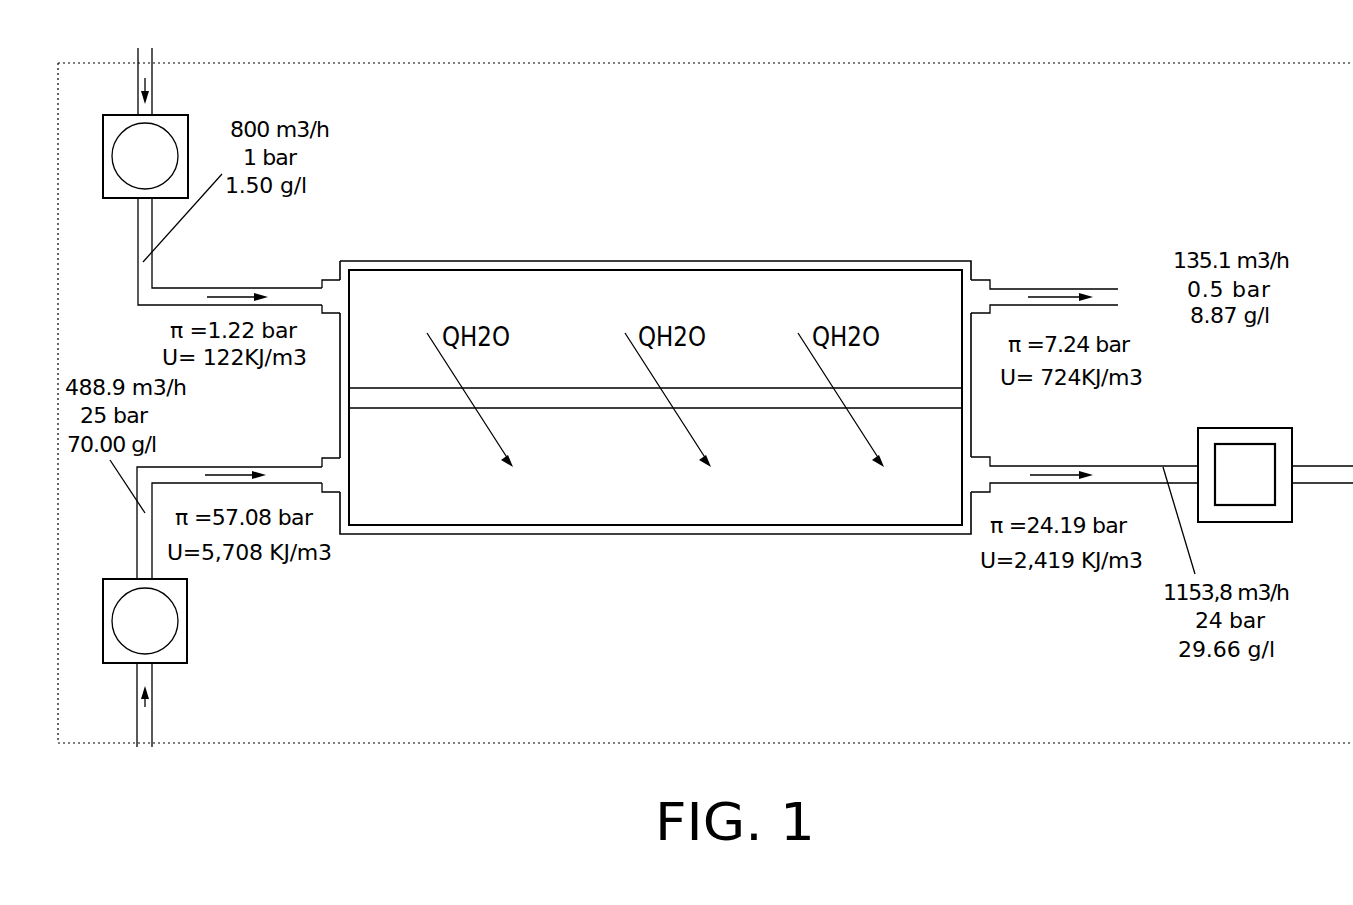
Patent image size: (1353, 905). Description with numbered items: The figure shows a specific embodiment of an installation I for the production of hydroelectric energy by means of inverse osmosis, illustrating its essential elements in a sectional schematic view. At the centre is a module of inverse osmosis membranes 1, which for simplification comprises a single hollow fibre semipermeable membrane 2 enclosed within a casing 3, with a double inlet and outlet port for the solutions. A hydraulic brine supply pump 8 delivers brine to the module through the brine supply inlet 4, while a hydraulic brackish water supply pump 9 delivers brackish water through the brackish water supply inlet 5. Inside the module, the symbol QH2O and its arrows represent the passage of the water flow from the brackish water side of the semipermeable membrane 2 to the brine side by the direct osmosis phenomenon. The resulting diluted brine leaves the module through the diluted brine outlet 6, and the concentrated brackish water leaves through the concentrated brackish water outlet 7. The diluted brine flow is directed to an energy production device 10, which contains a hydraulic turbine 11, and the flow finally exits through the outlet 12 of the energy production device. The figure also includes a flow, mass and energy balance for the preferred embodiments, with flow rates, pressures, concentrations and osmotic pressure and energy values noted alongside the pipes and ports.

The installation for the production of hydroelectric energy by means of inverse osmo I is at (1273, 108).
The module of inverse osmosis membranes 1 is at (390, 260).
The semipermeable membrane 2 is at (558, 400).
The casing 3 is at (457, 268).
The brine supply inlet 4 is at (328, 460).
The brackish water supply inlet 5 is at (327, 282).
The diluted brine outlet 6 is at (980, 493).
The concentrated brackish water outlet 7 is at (983, 280).
The hydraulic brine supply pump 8 is at (168, 620).
The hydraulic brackish water supply pump 9 is at (175, 140).
The energy production device 10 is at (1205, 462).
The hydraulic turbine 11 is at (1253, 442).
The outlet of the energy production device 12 is at (1285, 497).